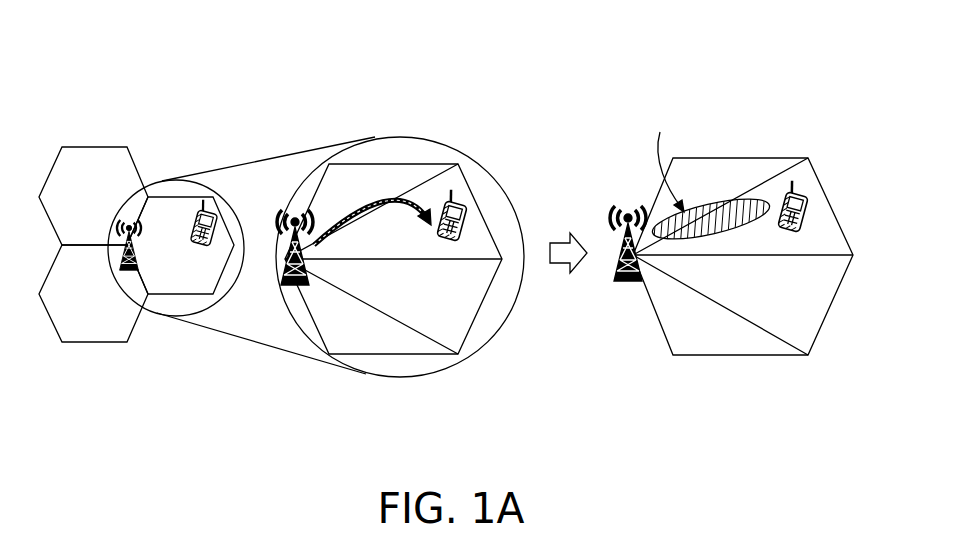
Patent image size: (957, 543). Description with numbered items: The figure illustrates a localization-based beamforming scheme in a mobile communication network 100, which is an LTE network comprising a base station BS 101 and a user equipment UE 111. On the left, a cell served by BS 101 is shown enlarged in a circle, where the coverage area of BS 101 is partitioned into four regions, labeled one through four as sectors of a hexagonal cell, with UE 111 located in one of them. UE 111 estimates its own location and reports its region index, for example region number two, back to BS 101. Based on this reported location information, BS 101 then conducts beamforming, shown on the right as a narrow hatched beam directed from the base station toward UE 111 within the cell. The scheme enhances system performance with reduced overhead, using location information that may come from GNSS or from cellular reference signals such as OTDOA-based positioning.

The mobile communication network 100 is at (801, 41).
The base station 101 is at (285, 287).
The user equipment 111 is at (452, 243).